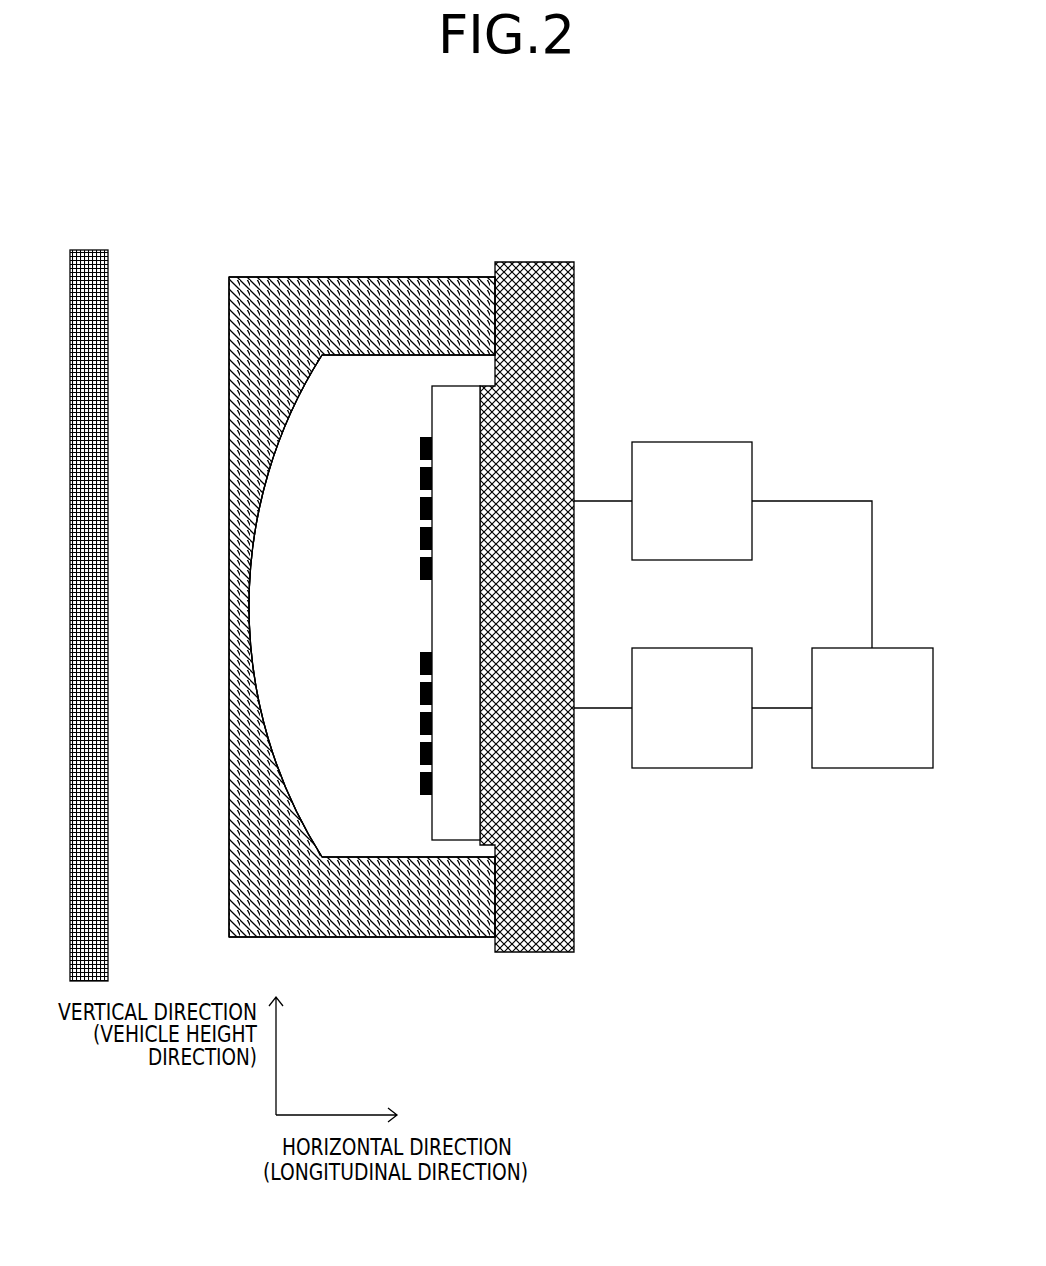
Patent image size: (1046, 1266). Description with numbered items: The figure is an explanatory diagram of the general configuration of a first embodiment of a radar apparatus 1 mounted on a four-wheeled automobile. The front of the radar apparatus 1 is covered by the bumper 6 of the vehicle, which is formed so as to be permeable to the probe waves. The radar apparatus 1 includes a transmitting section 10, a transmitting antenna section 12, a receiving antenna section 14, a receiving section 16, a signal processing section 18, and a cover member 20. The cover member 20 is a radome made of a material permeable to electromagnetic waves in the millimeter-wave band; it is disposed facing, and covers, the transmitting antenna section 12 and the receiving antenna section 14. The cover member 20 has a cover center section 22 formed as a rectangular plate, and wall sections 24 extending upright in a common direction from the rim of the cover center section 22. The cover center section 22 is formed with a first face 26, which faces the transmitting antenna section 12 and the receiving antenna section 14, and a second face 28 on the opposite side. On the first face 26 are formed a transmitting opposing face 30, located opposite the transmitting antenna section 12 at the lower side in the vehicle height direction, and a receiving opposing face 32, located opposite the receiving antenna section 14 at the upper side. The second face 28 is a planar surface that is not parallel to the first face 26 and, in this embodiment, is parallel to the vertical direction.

The radar apparatus 1 is at (546, 180).
The bumper 6 is at (90, 250).
The transmitting section 10 is at (742, 648).
The transmitting antenna section 12 is at (400, 760).
The receiving antenna section 14 is at (410, 450).
The receiving section 16 is at (746, 442).
The signal processing section 18 is at (923, 648).
The cover member 20 is at (272, 243).
The cover center section 22 is at (227, 850).
The wall sections 24 is at (406, 277).
The first face 26 is at (340, 493).
The second face 28 is at (218, 373).
The transmitting opposing face 30 is at (275, 758).
The receiving opposing face 32 is at (282, 452).